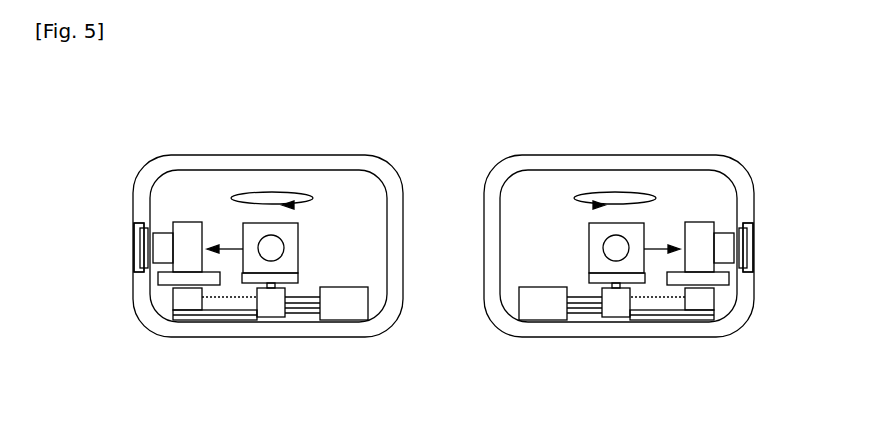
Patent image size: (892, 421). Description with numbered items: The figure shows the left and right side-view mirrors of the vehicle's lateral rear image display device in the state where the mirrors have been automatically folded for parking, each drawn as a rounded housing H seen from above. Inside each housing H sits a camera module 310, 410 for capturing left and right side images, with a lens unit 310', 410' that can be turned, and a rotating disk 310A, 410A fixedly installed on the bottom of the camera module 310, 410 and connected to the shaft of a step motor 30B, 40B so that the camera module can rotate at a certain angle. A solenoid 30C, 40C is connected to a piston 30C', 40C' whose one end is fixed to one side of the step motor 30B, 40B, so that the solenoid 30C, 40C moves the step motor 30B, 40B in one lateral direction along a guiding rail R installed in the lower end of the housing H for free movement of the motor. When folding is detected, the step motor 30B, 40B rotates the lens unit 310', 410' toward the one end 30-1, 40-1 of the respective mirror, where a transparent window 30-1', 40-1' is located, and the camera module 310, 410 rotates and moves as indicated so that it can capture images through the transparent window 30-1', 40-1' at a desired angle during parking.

The housing H is at (347, 155).
The camera module 310 is at (233, 191).
The lens unit 310' is at (198, 188).
The rotating disk 310A is at (290, 280).
The one end of left side-view mirror 30-1 is at (104, 231).
The transparent window 30-1' is at (100, 247).
The guiding rail R is at (217, 317).
The step motor 30B is at (268, 310).
The solenoid 30C is at (350, 330).
The piston 30C' is at (316, 350).
The camera module 410 is at (654, 192).
The lens unit 410' is at (690, 188).
The rotating disk 410A is at (595, 282).
The one end of right side-view mirror 40-1 is at (780, 231).
The transparent window 40-1' is at (788, 247).
The step motor 40B is at (620, 310).
The solenoid 40C is at (537, 330).
The piston 40C' is at (571, 350).